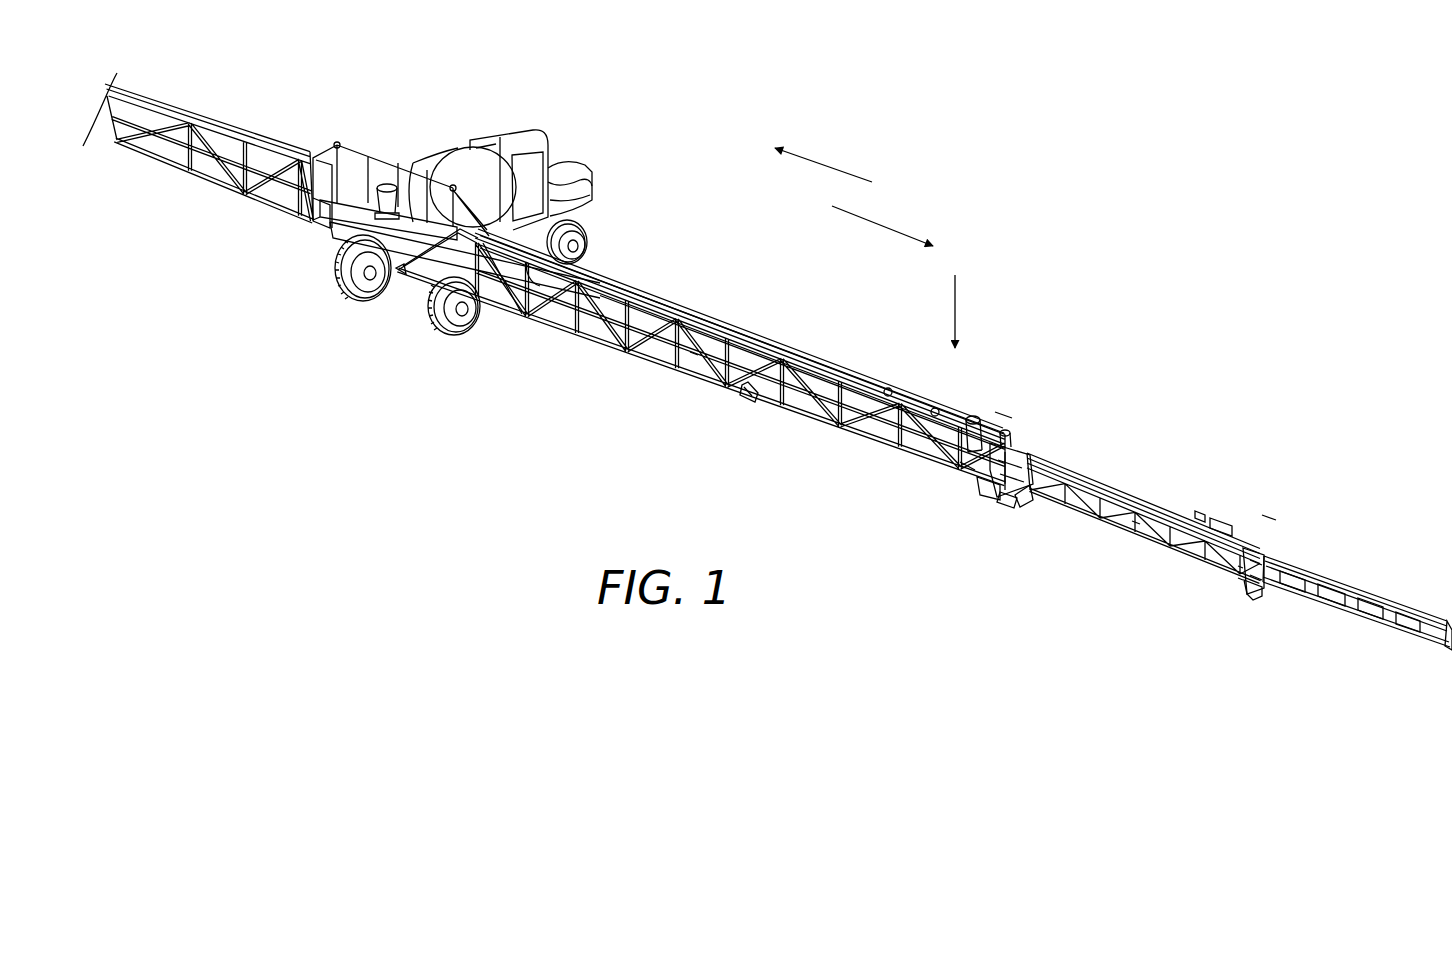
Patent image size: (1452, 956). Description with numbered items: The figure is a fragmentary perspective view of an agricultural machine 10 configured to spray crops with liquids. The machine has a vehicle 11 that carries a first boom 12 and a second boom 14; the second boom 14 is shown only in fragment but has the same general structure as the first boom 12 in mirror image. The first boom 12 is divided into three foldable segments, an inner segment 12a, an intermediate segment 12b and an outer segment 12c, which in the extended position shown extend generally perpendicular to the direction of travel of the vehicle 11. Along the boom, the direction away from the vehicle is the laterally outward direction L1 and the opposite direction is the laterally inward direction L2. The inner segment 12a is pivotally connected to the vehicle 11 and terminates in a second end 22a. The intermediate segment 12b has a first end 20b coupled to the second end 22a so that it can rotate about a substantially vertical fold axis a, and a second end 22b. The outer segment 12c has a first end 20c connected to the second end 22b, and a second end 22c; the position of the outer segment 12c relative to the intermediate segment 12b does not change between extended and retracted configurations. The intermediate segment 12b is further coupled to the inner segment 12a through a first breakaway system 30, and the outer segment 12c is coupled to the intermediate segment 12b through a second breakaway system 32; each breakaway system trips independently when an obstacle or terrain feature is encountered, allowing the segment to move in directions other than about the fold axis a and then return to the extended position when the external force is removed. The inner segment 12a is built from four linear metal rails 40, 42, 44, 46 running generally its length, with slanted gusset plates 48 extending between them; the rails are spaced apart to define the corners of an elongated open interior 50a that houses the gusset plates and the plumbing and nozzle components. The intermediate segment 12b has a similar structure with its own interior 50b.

The agricultural machine 10 is at (977, 73).
The vehicle 11 is at (530, 128).
The first boom 12 is at (1085, 270).
The inner boom segment 12a is at (778, 310).
The intermediate boom segment 12b is at (1135, 465).
The outer boom segment 12c is at (1338, 550).
The second boom 14 is at (250, 90).
The first end of intermediate segment 20b is at (412, 298).
The first end of outer segment 20c is at (1252, 600).
The second end of inner segment 22a is at (1000, 405).
The second end of intermediate segment 22b is at (1270, 510).
The second end of outer segment 22c is at (1437, 660).
The first breakaway system 30 is at (980, 510).
The second breakaway system 32 is at (1237, 593).
The linear metal rail 40 is at (590, 352).
The linear metal rail 42 is at (563, 305).
The linear metal rail 44 is at (610, 278).
The linear metal rail 46 is at (646, 292).
The slanted gusset plates 48 is at (690, 320).
The open interior of inner boom section 50a is at (690, 358).
The interior of intermediate boom section 50b is at (1132, 527).
The fold axis a is at (952, 302).
The laterally outward direction L1 is at (888, 224).
The laterally inward direction L2 is at (835, 163).